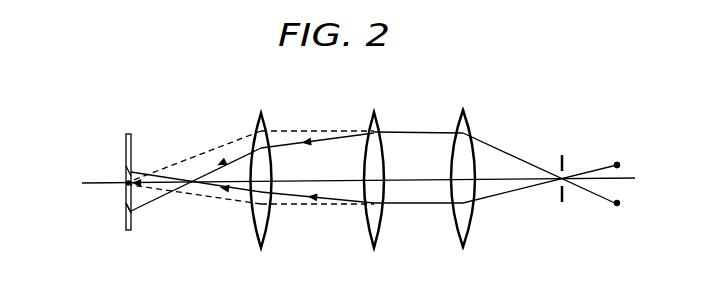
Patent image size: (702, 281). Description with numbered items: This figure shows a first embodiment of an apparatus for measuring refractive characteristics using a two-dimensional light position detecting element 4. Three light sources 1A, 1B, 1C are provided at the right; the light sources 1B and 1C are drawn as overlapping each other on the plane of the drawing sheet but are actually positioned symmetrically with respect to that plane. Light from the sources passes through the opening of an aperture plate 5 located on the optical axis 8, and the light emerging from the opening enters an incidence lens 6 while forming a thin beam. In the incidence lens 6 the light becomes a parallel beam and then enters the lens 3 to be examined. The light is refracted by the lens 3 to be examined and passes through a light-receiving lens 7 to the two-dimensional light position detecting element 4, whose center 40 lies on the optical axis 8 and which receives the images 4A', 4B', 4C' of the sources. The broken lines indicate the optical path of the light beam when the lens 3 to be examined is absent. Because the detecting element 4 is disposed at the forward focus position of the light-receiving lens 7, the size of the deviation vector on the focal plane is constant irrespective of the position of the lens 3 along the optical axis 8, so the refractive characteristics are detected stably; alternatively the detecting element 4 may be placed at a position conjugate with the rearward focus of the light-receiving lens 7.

The light source 1A is at (618, 205).
The light source 1B is at (619, 164).
The light source 1C is at (619, 164).
The lens to be examined 3 is at (375, 112).
The two-dimensional light position detecting element 4 is at (131, 140).
The image of light source 1A 4A' is at (104, 147).
The image of light source 1B 4B' is at (90, 232).
The image of light source 1C 4C' is at (90, 232).
The center of light receiving plate 40 is at (126, 184).
The aperture plate 5 is at (563, 154).
The incidence lens 6 is at (464, 110).
The light-receiving lens 7 is at (262, 113).
The optical axis 8 is at (95, 181).